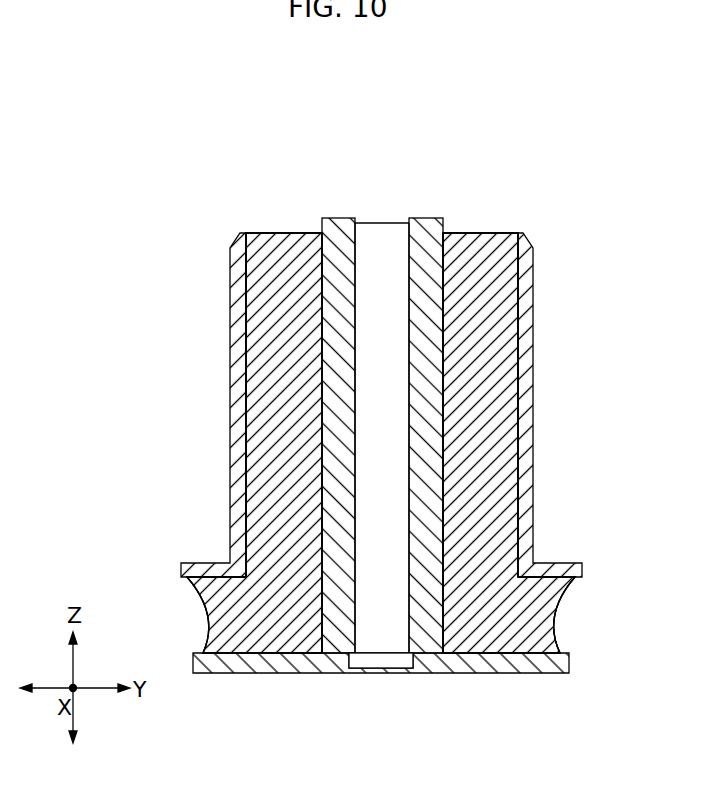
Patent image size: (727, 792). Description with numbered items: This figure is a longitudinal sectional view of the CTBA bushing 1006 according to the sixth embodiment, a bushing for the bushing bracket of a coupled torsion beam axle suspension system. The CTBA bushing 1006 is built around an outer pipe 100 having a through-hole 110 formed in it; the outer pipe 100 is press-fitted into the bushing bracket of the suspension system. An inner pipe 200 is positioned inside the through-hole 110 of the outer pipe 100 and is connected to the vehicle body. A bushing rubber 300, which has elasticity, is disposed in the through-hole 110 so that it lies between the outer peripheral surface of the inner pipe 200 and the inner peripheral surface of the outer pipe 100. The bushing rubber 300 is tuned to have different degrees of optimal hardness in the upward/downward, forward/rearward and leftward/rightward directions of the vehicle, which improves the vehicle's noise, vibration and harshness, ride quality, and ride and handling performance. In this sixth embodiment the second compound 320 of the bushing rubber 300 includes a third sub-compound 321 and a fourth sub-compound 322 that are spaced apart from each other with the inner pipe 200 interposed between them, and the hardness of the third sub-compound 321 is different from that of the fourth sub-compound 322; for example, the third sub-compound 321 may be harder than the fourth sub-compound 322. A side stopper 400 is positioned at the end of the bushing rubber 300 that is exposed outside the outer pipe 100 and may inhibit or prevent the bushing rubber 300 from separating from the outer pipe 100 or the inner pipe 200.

The CTBA bushing 1006 is at (398, 150).
The outer pipe 100 is at (528, 408).
The through-hole 110 is at (386, 309).
The inner pipe 200 is at (425, 229).
The bushing rubber 300 is at (271, 428).
The second compound 320 is at (270, 482).
The third sub-compound 321 is at (288, 532).
The fourth sub-compound 322 is at (487, 532).
The side stopper 400 is at (435, 670).